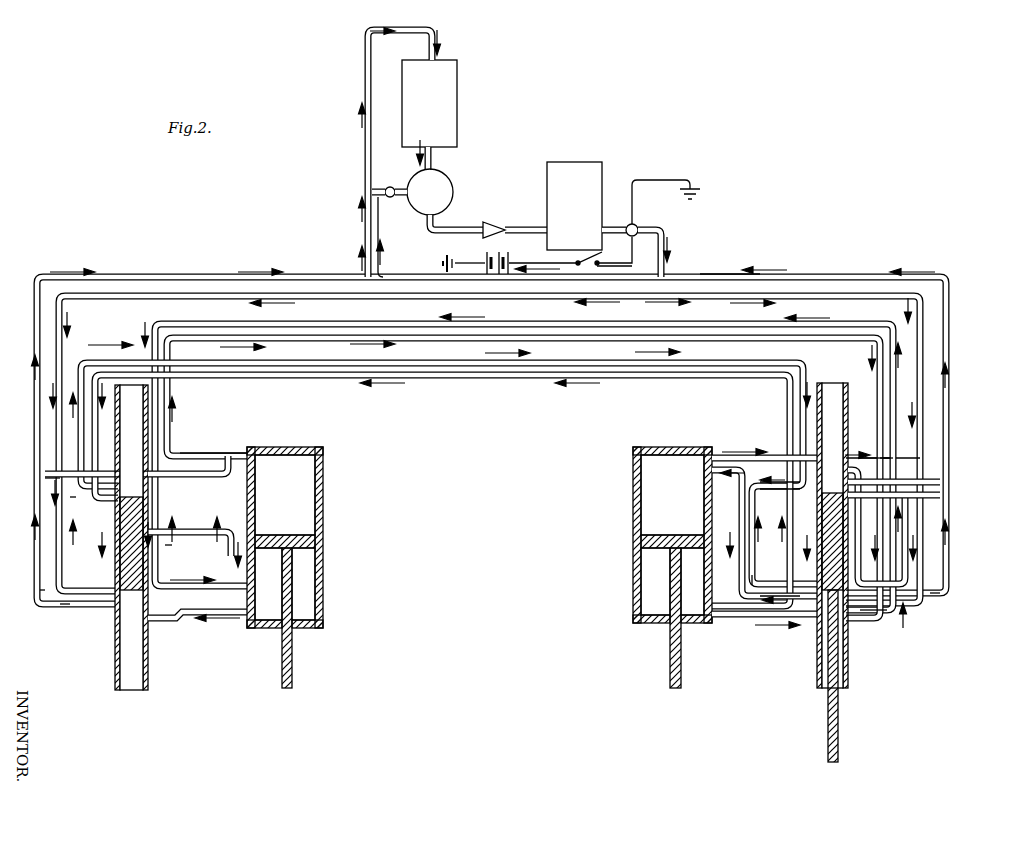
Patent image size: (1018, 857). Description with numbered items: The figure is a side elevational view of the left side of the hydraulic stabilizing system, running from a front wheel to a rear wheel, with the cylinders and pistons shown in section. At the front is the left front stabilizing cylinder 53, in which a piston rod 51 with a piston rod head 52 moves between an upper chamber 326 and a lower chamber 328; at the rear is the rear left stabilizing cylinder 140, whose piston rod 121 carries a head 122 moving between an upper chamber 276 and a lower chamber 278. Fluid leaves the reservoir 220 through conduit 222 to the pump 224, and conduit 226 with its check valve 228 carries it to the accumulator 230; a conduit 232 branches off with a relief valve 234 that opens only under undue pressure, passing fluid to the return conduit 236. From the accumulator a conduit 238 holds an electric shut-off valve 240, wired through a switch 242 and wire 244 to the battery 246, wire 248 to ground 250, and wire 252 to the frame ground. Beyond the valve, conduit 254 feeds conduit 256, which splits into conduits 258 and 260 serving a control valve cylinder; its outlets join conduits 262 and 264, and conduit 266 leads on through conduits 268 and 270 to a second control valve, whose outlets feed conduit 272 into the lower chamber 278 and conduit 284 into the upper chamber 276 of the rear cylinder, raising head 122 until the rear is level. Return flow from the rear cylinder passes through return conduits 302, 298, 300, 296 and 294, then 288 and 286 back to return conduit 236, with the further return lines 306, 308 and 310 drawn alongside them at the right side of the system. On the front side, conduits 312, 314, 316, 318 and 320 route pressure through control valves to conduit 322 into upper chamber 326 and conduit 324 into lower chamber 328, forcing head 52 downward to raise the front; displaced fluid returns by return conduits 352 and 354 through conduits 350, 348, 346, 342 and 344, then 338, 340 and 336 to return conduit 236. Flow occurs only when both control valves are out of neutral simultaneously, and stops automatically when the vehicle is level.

The piston rod 51 is at (281, 648).
The piston rod head 52 is at (310, 540).
The left front stabilizing cylinder 53 is at (275, 447).
The piston rod 121 is at (669, 657).
The piston head 122 is at (650, 540).
The rear left stabilizing cylinder 140 is at (676, 447).
The reservoir 220 is at (429, 103).
The conduit 222 is at (433, 160).
The pump 224 is at (430, 192).
The conduit 226 is at (450, 226).
The check valve 228 is at (490, 224).
The accumulator 230 is at (574, 206).
The conduit 232 is at (395, 187).
The relief valve 234 is at (382, 190).
The return conduit 236 is at (412, 46).
The conduit 238 is at (608, 228).
The electric shut-off valve 240 is at (634, 224).
The switch 242 is at (590, 259).
The wire 244 is at (627, 265).
The battery 246 is at (495, 258).
The wire 248 is at (464, 262).
The ground 250 is at (701, 190).
The wire 252 is at (658, 180).
The conduit 254 is at (668, 262).
The conduit 256 is at (133, 302).
The conduit 258 is at (73, 497).
The conduit 260 is at (56, 590).
The conduit 262 is at (172, 543).
The conduit 264 is at (168, 480).
The conduit 266 is at (432, 338).
The conduit 268 is at (856, 455).
The conduit 270 is at (888, 615).
The conduit 272 is at (795, 447).
The upper chamber 276 is at (655, 495).
The lower chamber 278 is at (652, 572).
The conduit 284 is at (735, 478).
The return conduit 286 is at (293, 275).
The return conduit 288 is at (44, 477).
The return conduit 294 is at (172, 458).
The return conduit 296 is at (255, 325).
The return conduit 298 is at (892, 454).
The return conduit 300 is at (900, 590).
The return conduit 302 is at (724, 620).
The conduit 306 is at (700, 300).
The valve chamber 308 is at (876, 527).
The conduit 310 is at (923, 515).
The conduit 312 is at (805, 592).
The conduit 314 is at (800, 484).
The conduit 316 is at (520, 378).
The conduit 318 is at (60, 503).
The conduit 320 is at (78, 606).
The conduit 322 is at (237, 447).
The conduit 324 is at (176, 514).
The upper chamber 326 is at (300, 487).
The lower chamber 328 is at (305, 575).
The return conduit 336 is at (733, 275).
The return conduit 338 is at (930, 485).
The return conduit 340 is at (940, 588).
The return conduit 342 is at (805, 580).
The return conduit 344 is at (805, 497).
The return conduit 346 is at (573, 365).
The return conduit 348 is at (140, 460).
The return conduit 350 is at (70, 536).
The return conduit 352 is at (186, 622).
The return conduit 354 is at (197, 454).